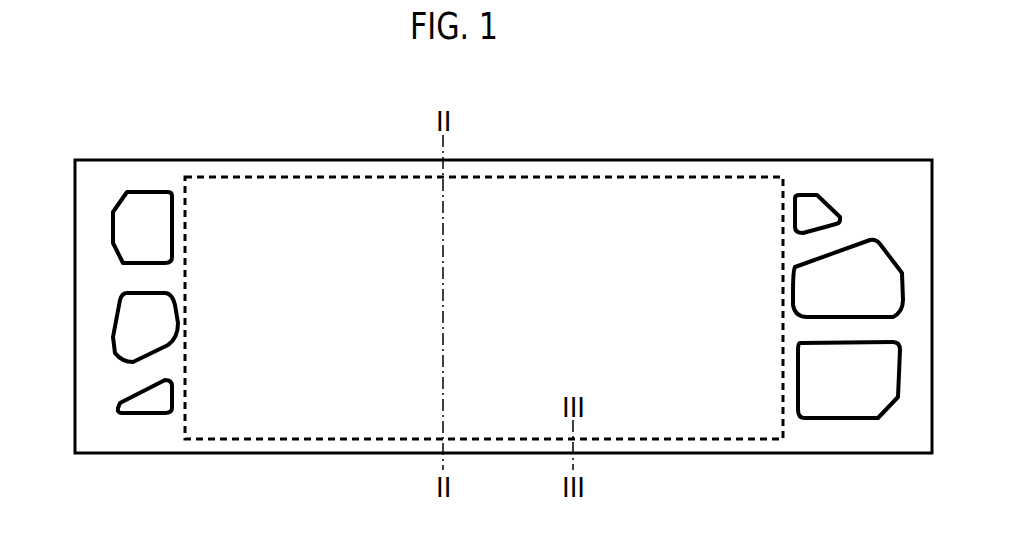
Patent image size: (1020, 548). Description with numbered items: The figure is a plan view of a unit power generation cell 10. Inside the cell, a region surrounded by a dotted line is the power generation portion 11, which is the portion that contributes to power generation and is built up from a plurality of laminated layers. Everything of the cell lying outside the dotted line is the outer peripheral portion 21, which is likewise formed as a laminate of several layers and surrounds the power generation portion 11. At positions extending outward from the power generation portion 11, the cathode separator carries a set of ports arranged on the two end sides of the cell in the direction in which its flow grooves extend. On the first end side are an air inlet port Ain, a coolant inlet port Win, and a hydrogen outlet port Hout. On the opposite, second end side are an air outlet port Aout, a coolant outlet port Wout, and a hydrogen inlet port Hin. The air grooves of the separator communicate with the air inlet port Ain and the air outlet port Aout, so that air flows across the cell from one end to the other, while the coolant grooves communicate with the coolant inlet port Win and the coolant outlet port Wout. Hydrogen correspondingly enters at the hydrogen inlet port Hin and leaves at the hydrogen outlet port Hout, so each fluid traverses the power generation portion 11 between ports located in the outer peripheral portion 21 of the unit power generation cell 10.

The unit power generation cell 10 is at (86, 127).
The power generation portion 11 is at (637, 400).
The outer peripheral portion 21 is at (517, 438).
The air inlet port Ain is at (145, 208).
The coolant inlet port Win is at (140, 330).
The hydrogen outlet port Hout is at (148, 405).
The hydrogen inlet port Hin is at (812, 215).
The coolant outlet port Wout is at (863, 282).
The air outlet port Aout is at (848, 395).